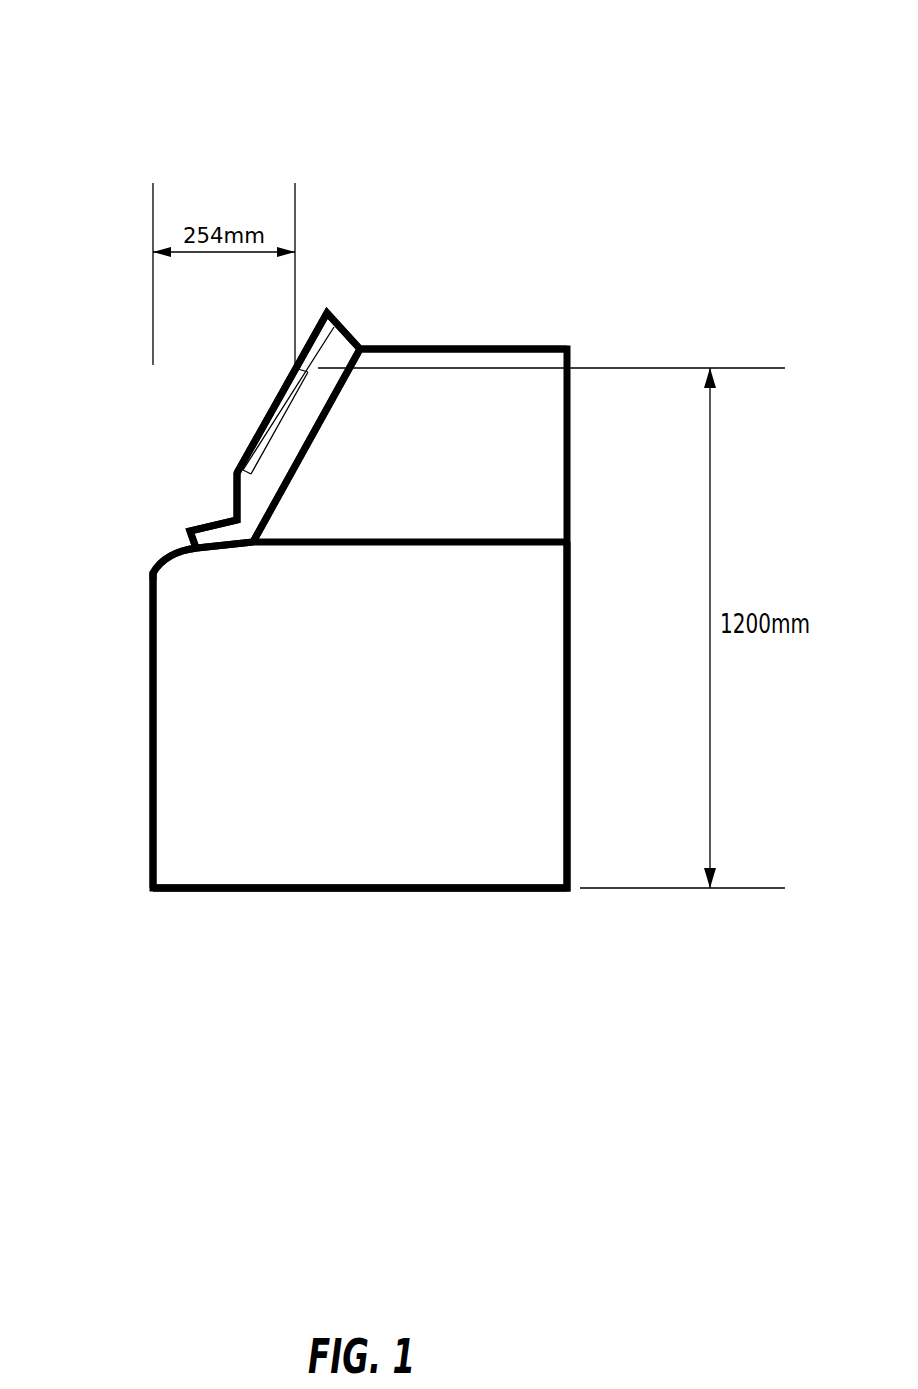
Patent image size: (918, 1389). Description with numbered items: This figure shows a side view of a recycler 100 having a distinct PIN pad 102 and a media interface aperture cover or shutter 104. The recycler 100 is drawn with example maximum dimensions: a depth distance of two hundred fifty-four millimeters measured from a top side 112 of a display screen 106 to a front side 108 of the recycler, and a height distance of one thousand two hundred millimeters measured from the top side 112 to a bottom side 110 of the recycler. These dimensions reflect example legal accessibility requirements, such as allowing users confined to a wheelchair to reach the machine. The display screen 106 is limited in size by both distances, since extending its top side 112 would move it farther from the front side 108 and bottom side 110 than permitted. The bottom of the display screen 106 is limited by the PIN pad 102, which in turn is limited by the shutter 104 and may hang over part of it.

The recycler 100 is at (695, 25).
The PIN pad 102 is at (220, 522).
The media interface aperture cover or shutter 104 is at (167, 560).
The display screen 106 is at (263, 428).
The front side 108 is at (148, 805).
The bottom side 110 is at (383, 885).
The top side 112 is at (345, 326).